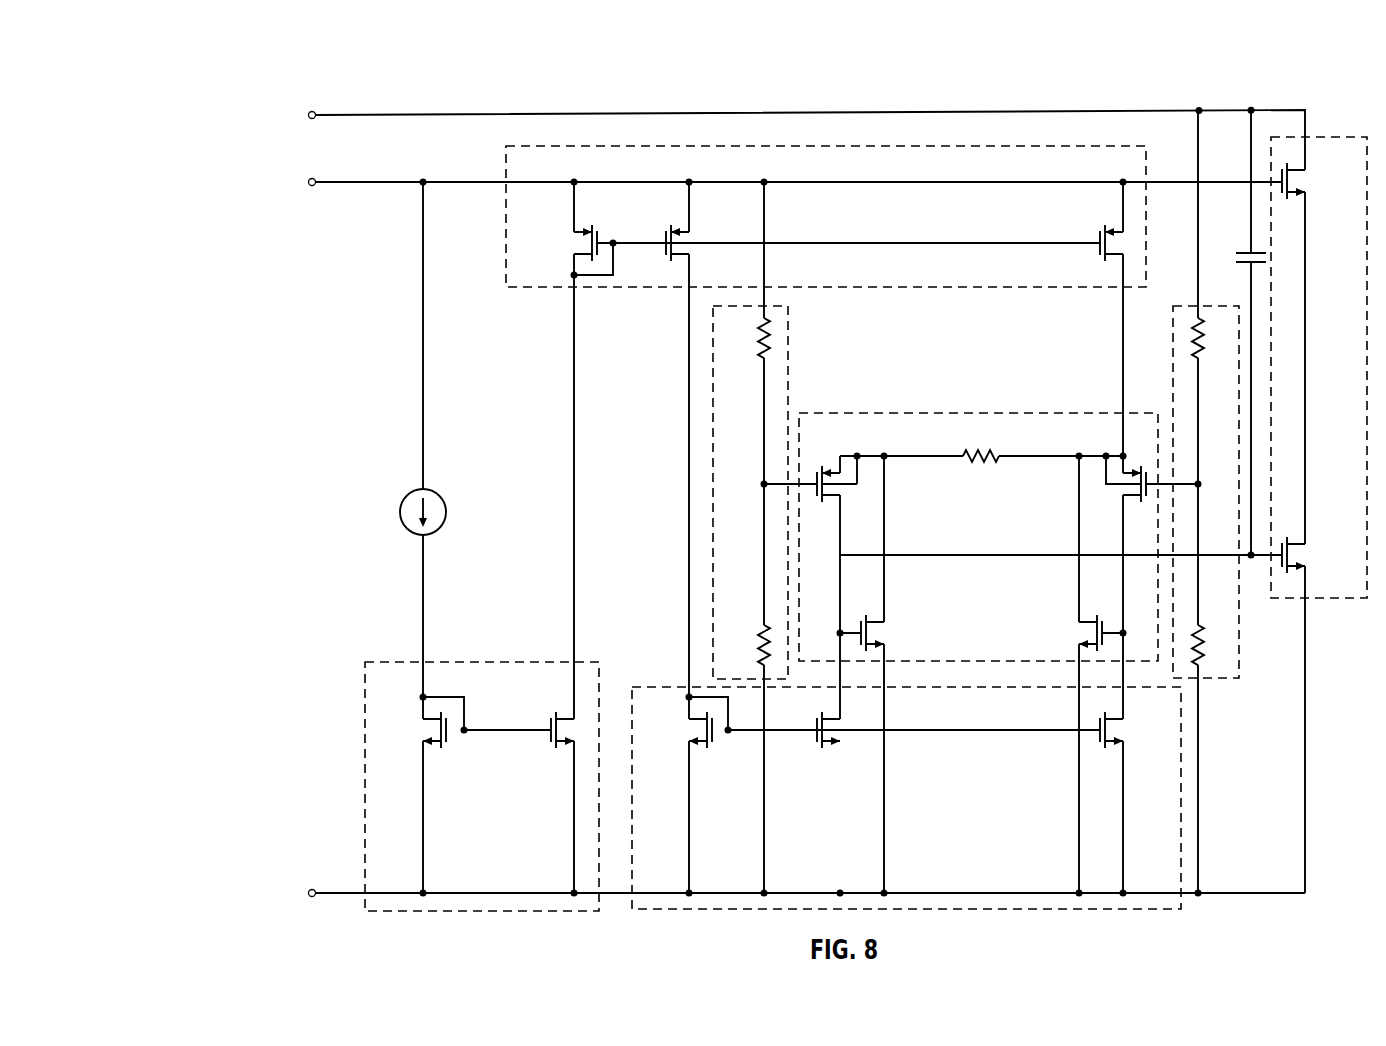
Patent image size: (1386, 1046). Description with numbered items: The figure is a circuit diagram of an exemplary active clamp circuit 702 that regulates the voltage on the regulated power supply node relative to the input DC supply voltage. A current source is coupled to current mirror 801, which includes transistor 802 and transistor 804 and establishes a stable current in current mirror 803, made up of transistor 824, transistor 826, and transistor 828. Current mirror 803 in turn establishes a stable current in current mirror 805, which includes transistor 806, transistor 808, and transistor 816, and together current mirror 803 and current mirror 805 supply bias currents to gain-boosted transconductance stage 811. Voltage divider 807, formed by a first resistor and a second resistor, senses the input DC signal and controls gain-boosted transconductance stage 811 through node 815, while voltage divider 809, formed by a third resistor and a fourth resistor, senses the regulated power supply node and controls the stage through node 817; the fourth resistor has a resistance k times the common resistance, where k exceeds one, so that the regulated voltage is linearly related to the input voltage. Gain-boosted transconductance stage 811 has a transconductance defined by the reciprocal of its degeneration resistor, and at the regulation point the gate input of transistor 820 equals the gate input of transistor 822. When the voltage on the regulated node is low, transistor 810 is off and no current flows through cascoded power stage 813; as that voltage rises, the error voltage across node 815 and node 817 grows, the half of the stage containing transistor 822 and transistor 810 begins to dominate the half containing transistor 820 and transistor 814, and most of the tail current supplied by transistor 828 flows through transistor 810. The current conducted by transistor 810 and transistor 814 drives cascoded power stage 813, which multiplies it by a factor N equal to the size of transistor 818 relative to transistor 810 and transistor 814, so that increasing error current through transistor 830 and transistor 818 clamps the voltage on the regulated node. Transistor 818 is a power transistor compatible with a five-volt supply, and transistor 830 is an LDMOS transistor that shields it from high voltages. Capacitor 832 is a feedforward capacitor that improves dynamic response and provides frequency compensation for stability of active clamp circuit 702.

The active clamp circuit 702 is at (235, 77).
The current mirror 801 is at (400, 691).
The transistor 802 is at (423, 744).
The transistor 804 is at (553, 742).
The current mirror 803 is at (542, 171).
The transistor 824 is at (574, 255).
The transistor 826 is at (689, 255).
The transistor 828 is at (1100, 257).
The current mirror 805 is at (668, 716).
The transistor 806 is at (688, 742).
The transistor 808 is at (821, 742).
The transistor 816 is at (1124, 741).
The voltage divider 807 is at (749, 333).
The node 815 is at (762, 486).
The voltage divider 809 is at (1237, 334).
The node 817 is at (1200, 482).
The gain-boosted transconductance stage 811 is at (836, 440).
The transistor 822 is at (817, 497).
The transistor 820 is at (1146, 496).
The transistor 810 is at (880, 622).
The transistor 814 is at (1080, 623).
The cascoded power stage 813 is at (1357, 165).
The transistor 830 is at (1298, 195).
The transistor 818 is at (1283, 567).
The capacitor 832 is at (1237, 253).